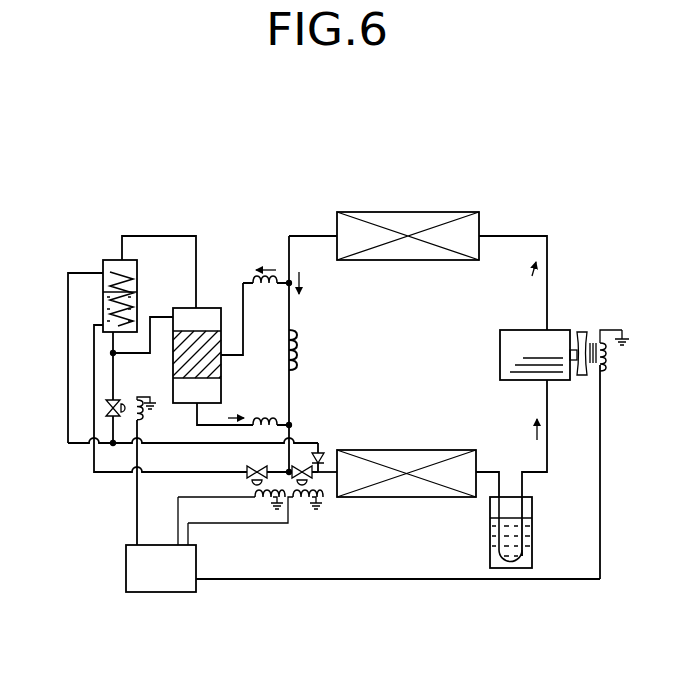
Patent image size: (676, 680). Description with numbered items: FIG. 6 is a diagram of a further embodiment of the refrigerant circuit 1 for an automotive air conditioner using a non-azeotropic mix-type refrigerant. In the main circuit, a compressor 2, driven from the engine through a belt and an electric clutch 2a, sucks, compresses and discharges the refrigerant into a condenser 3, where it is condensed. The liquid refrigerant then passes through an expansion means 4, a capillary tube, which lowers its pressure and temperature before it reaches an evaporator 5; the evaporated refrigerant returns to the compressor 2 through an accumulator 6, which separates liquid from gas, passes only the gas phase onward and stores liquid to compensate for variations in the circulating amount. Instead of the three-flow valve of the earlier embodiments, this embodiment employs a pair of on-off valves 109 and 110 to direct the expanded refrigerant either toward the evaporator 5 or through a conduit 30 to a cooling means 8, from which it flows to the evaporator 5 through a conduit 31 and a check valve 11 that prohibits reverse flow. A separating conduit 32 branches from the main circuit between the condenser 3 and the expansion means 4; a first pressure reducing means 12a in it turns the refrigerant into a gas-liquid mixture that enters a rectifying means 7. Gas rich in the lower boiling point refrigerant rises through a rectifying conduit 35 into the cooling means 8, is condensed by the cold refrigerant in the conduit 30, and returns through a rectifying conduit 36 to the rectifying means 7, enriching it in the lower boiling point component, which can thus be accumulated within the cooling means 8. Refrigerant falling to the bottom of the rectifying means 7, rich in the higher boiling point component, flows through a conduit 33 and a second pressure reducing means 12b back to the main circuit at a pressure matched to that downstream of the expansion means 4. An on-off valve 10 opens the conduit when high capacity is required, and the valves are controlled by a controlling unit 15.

The refrigerating cycle system 1 is at (409, 368).
The compressor 2 is at (557, 330).
The electric clutch 2a is at (580, 330).
The condenser 3 is at (425, 211).
The expansion means 4 is at (314, 355).
The evaporator 5 is at (412, 450).
The accumulator 6 is at (534, 512).
The rectifying means 7 is at (212, 306).
The cooling means 8 is at (115, 258).
The on-off valve 10 is at (120, 423).
The check valve 11 is at (325, 450).
The first pressure reducing means 12a is at (268, 292).
The second pressure reducing means 12b is at (266, 416).
The controlling unit 15 is at (163, 594).
The conduit 30 is at (165, 475).
The conduit 31 is at (67, 398).
The separating conduit 32 is at (283, 281).
The conduit 33 is at (234, 428).
The rectifying conduit 35 is at (163, 236).
The rectifying conduit 36 is at (151, 344).
The on-off valve 109 is at (320, 490).
The on-off valve 110 is at (246, 482).